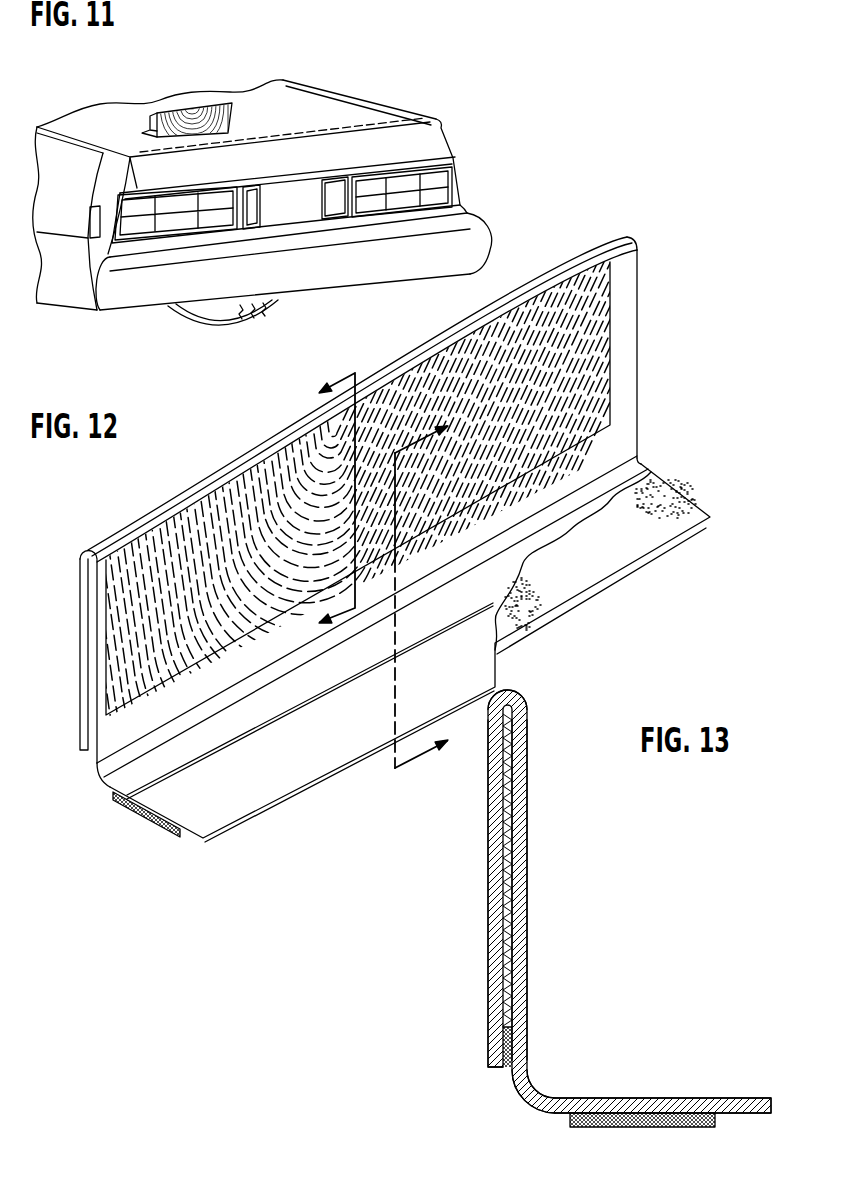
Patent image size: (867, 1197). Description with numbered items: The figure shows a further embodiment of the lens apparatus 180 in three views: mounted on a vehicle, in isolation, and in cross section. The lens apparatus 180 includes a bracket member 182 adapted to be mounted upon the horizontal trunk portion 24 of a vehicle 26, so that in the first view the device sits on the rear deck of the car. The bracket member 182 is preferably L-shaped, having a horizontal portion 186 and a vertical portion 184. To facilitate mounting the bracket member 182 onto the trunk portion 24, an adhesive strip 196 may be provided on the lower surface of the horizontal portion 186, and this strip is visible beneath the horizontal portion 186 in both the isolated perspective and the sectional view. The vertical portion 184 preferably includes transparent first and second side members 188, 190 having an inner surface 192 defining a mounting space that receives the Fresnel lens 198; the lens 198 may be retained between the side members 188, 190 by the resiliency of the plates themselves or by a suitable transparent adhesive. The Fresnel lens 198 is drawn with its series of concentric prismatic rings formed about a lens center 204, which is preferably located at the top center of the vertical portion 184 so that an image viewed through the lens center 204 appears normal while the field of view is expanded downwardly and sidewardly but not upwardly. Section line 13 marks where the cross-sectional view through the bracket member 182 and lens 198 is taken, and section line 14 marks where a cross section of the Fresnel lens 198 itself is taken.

In FIG. 11, the lens apparatus 180 is at (205, 81).
In FIG. 11, the horizontal trunk portion 24 is at (358, 115).
In FIG. 11, the vehicle 26 is at (467, 160).
In FIG. 12, the bracket member 182 is at (645, 458).
In FIG. 13, the bracket member 182 is at (545, 1087).
In FIG. 12, the vertical portion 184 is at (92, 627).
In FIG. 13, the vertical portion 184 is at (528, 951).
In FIG. 12, the horizontal portion 186 is at (238, 790).
In FIG. 13, the horizontal portion 186 is at (662, 1097).
In FIG. 13, the first side member 188 is at (493, 940).
In FIG. 13, the second side member 190 is at (518, 1010).
In FIG. 13, the inner surface 192 is at (510, 812).
In FIG. 12, the adhesive strip 196 is at (157, 828).
In FIG. 13, the adhesive strip 196 is at (700, 1123).
In FIG. 12, the Fresnel lens 198 is at (577, 326).
In FIG. 13, the Fresnel lens 198 is at (507, 882).
In FIG. 12, the lens center 204 is at (391, 367).
In FIG. 12, the section line 13- 13 is at (436, 585).
In FIG. 12, the section line 14- 14 is at (383, 570).